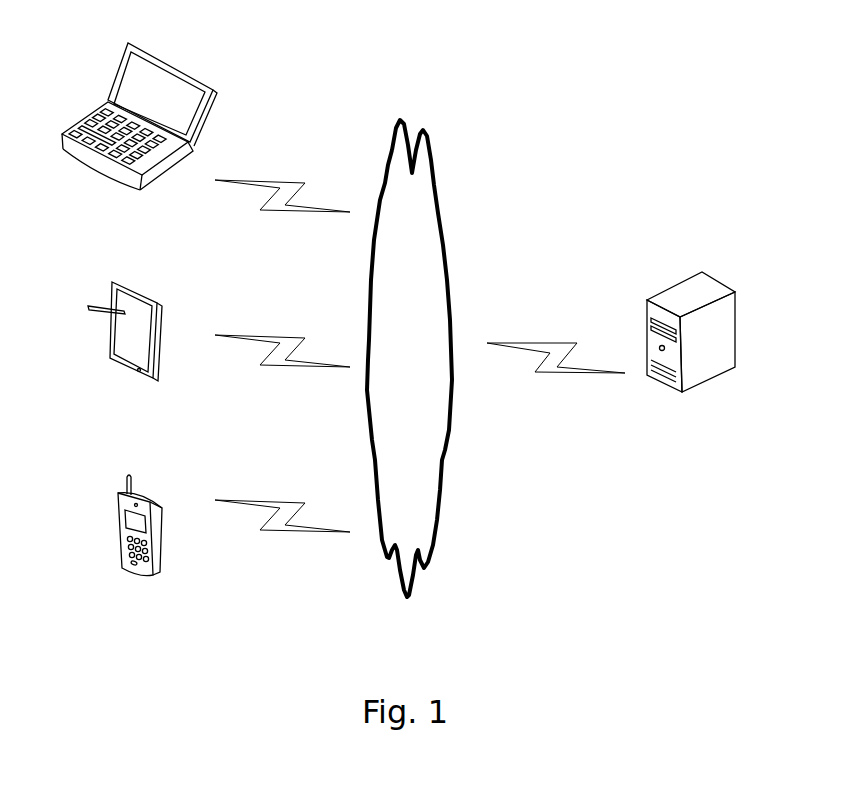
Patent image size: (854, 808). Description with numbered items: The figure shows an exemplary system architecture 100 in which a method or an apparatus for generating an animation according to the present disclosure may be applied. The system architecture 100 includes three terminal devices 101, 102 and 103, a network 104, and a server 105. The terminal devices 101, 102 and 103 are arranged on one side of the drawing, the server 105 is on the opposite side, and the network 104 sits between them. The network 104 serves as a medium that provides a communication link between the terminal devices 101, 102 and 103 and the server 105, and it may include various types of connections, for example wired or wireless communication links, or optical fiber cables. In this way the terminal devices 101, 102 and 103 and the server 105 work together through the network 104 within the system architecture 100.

The system architecture 100 is at (650, 31).
The terminal device 101 is at (140, 544).
The terminal device 102 is at (125, 349).
The terminal device 103 is at (139, 135).
The network 104 is at (409, 358).
The server 105 is at (691, 354).